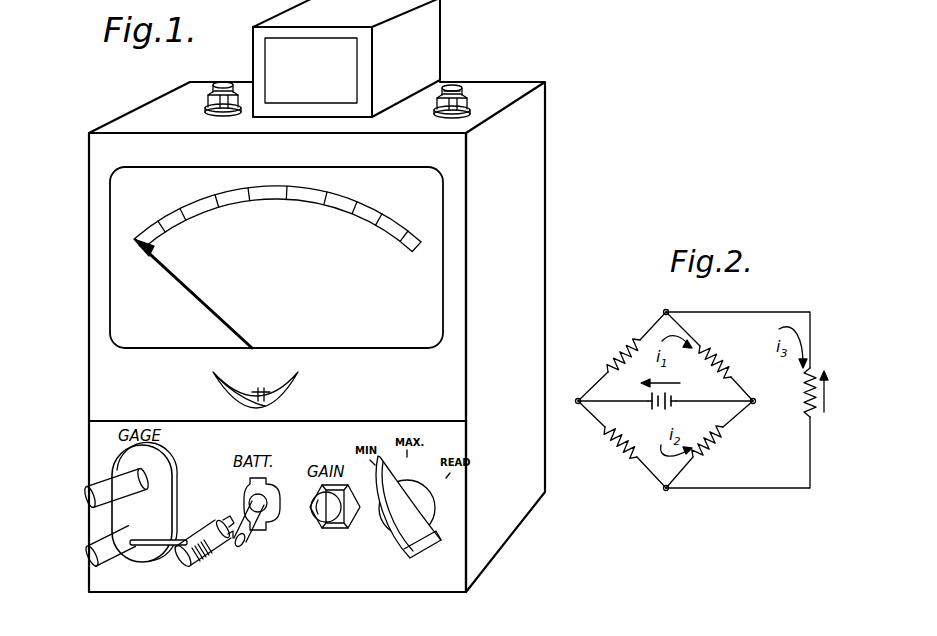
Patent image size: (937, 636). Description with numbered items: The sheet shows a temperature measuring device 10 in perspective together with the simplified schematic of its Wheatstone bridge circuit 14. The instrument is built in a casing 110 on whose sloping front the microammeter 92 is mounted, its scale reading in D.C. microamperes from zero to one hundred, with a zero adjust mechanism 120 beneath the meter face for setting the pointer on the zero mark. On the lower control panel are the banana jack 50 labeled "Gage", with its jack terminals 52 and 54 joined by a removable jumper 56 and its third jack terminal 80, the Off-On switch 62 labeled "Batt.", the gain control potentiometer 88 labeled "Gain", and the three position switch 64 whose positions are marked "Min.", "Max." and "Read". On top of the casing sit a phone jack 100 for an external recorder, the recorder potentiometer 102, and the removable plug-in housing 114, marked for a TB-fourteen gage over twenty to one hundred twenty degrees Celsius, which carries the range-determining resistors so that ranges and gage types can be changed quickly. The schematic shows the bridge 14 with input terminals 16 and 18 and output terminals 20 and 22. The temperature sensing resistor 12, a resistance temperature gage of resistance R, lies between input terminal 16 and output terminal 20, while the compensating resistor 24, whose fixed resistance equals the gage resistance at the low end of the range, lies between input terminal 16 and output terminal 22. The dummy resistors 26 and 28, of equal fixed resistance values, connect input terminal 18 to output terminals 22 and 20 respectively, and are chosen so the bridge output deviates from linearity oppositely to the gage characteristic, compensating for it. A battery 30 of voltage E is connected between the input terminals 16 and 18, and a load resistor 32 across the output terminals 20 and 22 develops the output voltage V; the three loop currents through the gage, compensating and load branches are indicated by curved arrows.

In FIG. 1, the temperature measuring device 10 is at (550, 123).
In FIG. 1, the banana jack 50 is at (150, 566).
In FIG. 1, the jack terminal 52 is at (90, 558).
In FIG. 1, the jack terminal 54 is at (206, 558).
In FIG. 1, the removable jumper 56 is at (160, 540).
In FIG. 1, the Off-On switch 62 is at (260, 544).
In FIG. 1, the three position switch 64 is at (394, 545).
In FIG. 1, the jack terminal 80 is at (88, 499).
In FIG. 1, the potentiometer 88 is at (339, 530).
In FIG. 1, the ammeter 92 is at (371, 338).
In FIG. 1, the phone jack 100 is at (461, 101).
In FIG. 1, the potentiometer 102 is at (229, 61).
In FIG. 1, the casing 110 is at (483, 557).
In FIG. 1, the housing 114 is at (427, 23).
In FIG. 1, the zero adjust mechanism 120 is at (238, 402).
In FIG. 2, the temperature sensing resistor 12 is at (619, 347).
In FIG. 2, the Wheatstone bridge circuit 14 is at (590, 418).
In FIG. 2, the input terminal 16 is at (577, 398).
In FIG. 2, the input terminal 18 is at (757, 399).
In FIG. 2, the output terminal 20 is at (666, 309).
In FIG. 2, the output terminal 22 is at (665, 492).
In FIG. 2, the compensating resistor 24 is at (627, 462).
In FIG. 2, the dummy resistor 26 is at (708, 462).
In FIG. 2, the dummy resistor 28 is at (728, 364).
In FIG. 2, the battery 30 is at (677, 394).
In FIG. 2, the load resistor 32 is at (812, 420).